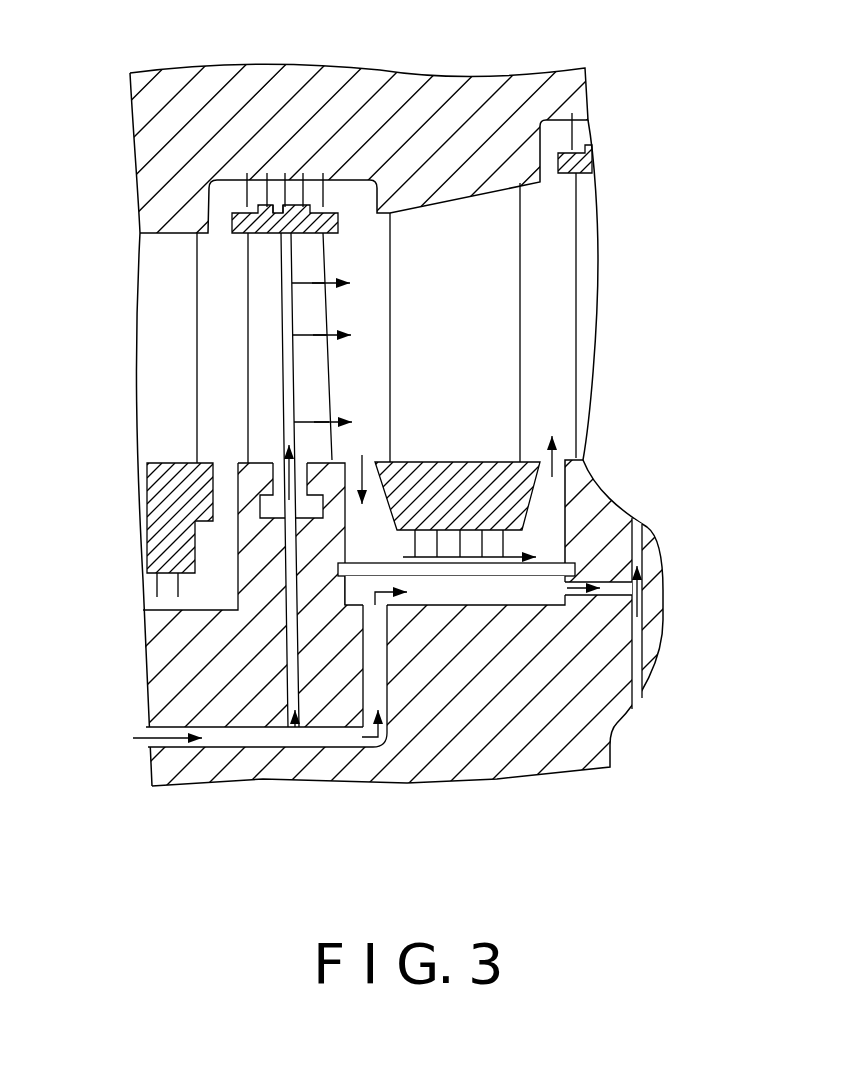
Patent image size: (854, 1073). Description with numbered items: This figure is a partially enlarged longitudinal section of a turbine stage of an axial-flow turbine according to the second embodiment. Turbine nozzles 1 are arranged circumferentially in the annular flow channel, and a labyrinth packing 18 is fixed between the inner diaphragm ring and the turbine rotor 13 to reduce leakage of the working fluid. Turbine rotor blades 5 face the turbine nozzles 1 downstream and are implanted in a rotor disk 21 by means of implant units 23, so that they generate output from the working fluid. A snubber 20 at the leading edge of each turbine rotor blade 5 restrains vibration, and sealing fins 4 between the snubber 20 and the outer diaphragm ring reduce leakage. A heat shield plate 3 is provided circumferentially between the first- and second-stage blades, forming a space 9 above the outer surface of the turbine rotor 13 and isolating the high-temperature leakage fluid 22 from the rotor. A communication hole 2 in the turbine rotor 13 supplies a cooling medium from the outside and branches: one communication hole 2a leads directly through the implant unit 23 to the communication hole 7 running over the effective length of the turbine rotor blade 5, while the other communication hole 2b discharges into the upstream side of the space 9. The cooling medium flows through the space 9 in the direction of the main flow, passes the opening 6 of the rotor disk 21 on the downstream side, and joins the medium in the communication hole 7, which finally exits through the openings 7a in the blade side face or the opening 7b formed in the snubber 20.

The turbine nozzle 1 is at (497, 300).
The communication hole 2 is at (262, 740).
The communication hole 2a is at (285, 540).
The communication hole 2b is at (383, 650).
The heat shield plate 3 is at (607, 505).
The sealing fin 4 is at (337, 178).
The turbine rotor blade 5 is at (260, 313).
The opening 6 is at (553, 607).
The communication hole 7 is at (287, 377).
The opening 7a is at (310, 336).
The opening 7b is at (295, 203).
The space 9 is at (500, 592).
The turbine rotor 13 is at (213, 658).
The labyrinth packing 18 is at (415, 537).
The snubber 20 is at (338, 220).
The rotor disk 21 is at (257, 553).
The high-temperature leakage fluid 22 is at (525, 546).
The implant unit 23 is at (268, 512).